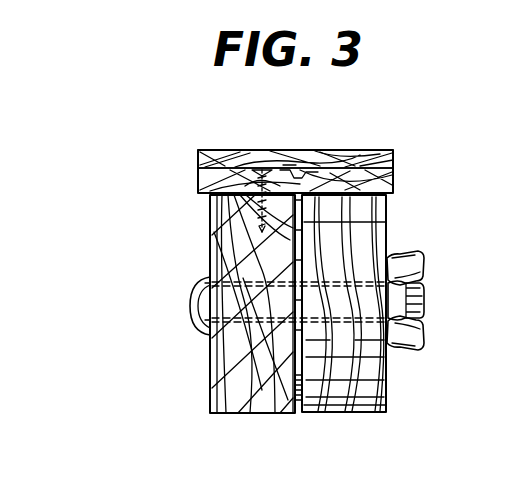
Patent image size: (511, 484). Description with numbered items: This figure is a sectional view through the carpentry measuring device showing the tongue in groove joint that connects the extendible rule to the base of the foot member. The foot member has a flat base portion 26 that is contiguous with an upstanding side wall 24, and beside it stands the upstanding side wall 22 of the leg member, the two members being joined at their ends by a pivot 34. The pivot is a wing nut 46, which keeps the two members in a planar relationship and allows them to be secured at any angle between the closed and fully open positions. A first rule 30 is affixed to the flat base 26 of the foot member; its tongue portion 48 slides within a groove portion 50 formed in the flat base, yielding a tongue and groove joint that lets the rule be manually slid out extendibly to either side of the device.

The upstanding side wall 22 is at (388, 402).
The upstanding side wall 24 is at (210, 380).
The flat base portion 26 is at (395, 182).
The first rule 30 is at (215, 150).
The pivot 34 is at (190, 304).
The wing nut 46 is at (418, 345).
The tongue portion 48 is at (290, 167).
The groove portion 50 is at (307, 172).